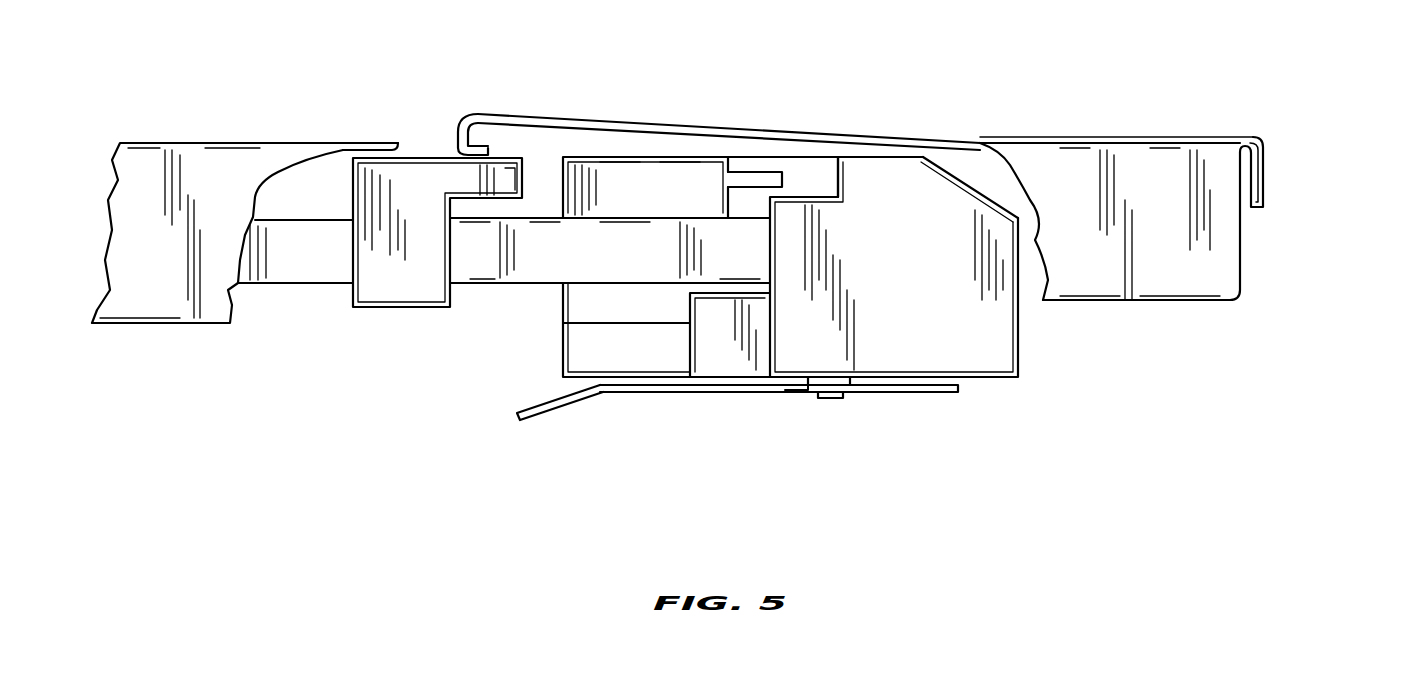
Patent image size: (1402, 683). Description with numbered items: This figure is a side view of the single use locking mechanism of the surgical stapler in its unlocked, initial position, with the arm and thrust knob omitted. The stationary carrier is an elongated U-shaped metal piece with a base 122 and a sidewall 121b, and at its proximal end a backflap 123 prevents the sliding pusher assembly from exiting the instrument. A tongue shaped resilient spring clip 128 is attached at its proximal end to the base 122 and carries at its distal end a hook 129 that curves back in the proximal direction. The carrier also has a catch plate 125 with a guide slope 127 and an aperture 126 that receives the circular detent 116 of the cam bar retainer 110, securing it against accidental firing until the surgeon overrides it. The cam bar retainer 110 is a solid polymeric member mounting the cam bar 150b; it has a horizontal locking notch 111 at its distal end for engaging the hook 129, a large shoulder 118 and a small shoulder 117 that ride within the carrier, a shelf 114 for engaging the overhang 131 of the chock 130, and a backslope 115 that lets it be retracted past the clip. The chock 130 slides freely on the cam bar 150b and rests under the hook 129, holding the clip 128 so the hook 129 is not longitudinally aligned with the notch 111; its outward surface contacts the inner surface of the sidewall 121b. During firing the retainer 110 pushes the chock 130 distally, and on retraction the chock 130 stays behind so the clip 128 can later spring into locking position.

The cam bar retainer 110 is at (885, 254).
The horizontal locking notch 111 is at (790, 172).
The shelf 114 is at (833, 183).
The backslope 115 is at (963, 182).
The circular detent 116 is at (825, 398).
The small shoulder 117 is at (705, 312).
The large shoulder 118 is at (600, 153).
The sidewall 121b is at (1195, 270).
The base 122 is at (1168, 306).
The backflap 123 is at (1267, 180).
The catch plate 125 is at (627, 393).
The aperture 126 is at (850, 392).
The guide slope 127 is at (530, 420).
The resilient spring clip 128 is at (693, 128).
The hook 129 is at (463, 118).
The chock 130 is at (412, 281).
The overhang 131 is at (513, 177).
The cam bar 150b is at (635, 261).